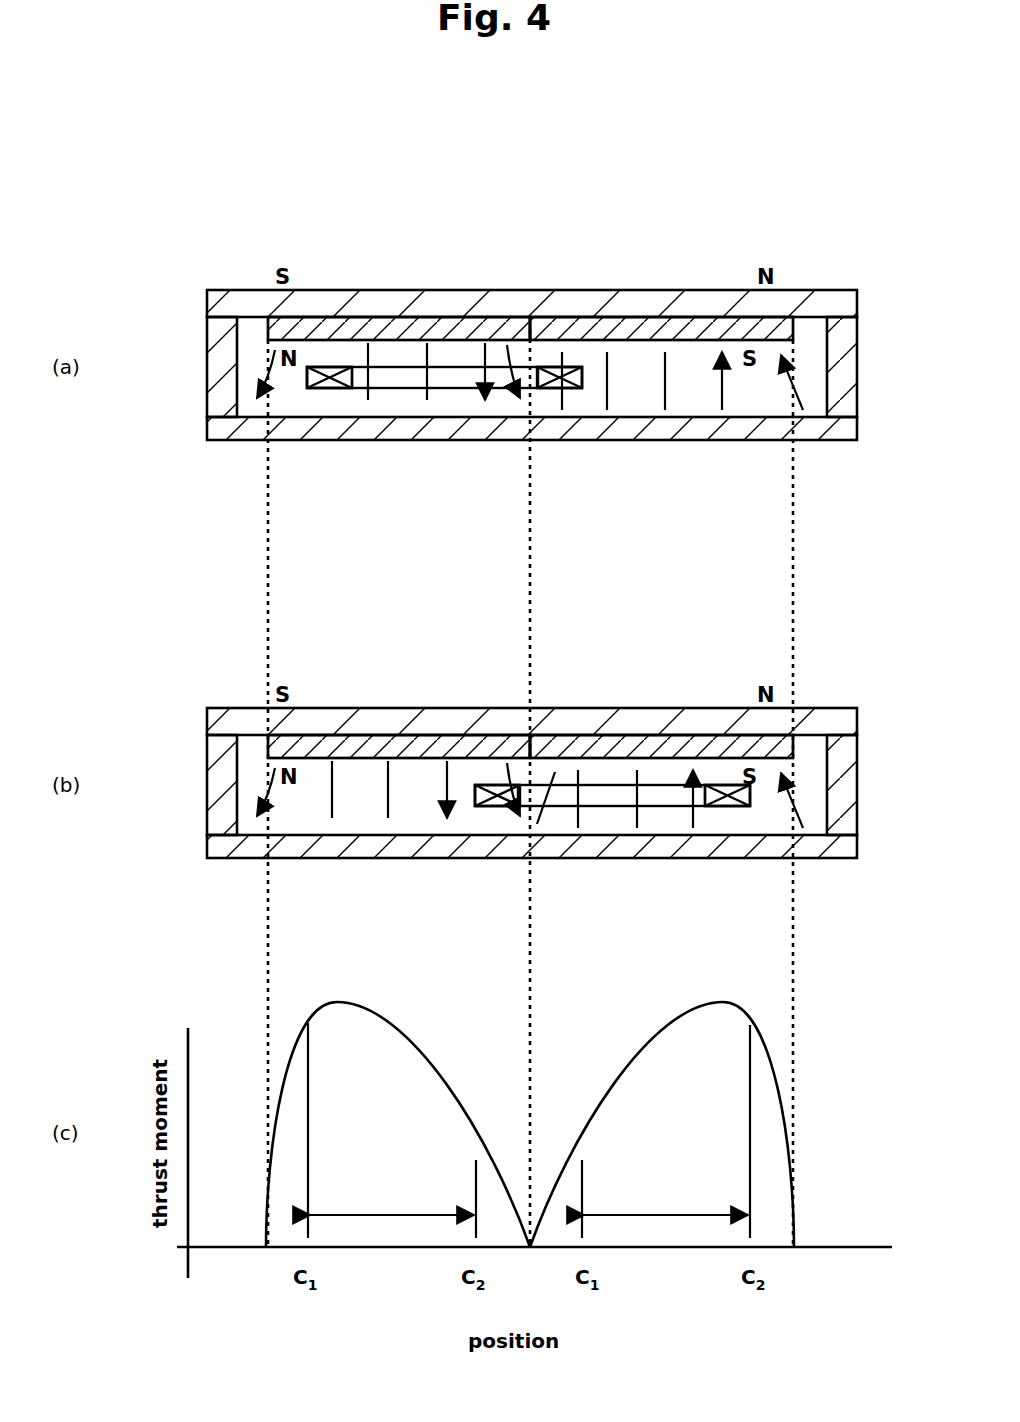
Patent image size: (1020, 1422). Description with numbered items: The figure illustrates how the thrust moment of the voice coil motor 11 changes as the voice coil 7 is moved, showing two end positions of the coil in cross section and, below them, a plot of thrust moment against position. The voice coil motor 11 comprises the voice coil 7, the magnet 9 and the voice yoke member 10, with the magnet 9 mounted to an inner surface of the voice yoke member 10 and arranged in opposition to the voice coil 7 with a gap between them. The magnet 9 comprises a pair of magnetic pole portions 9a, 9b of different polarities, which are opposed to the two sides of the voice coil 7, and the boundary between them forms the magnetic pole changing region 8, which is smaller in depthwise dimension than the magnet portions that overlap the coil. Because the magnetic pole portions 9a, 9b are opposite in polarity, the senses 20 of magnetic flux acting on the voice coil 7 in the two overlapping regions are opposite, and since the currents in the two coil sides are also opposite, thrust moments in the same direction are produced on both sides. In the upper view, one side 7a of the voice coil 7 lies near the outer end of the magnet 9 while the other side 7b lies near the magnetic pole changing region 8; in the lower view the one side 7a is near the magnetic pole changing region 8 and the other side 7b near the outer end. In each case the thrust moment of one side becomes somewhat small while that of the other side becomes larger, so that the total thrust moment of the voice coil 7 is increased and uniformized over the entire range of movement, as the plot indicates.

The voice coil 7 is at (546, 356).
The one side of the voice coil 7a is at (325, 390).
The other side of the voice coil 7b is at (565, 390).
The magnetic pole changing region 8 is at (533, 340).
The magnet 9 is at (410, 332).
The magnetic pole portion 9a is at (352, 332).
The magnetic pole portion 9b is at (672, 332).
The voice yoke member 10 is at (320, 300).
The voice coil motor 11 is at (831, 447).
The senses of magnetic flux 20 is at (609, 392).